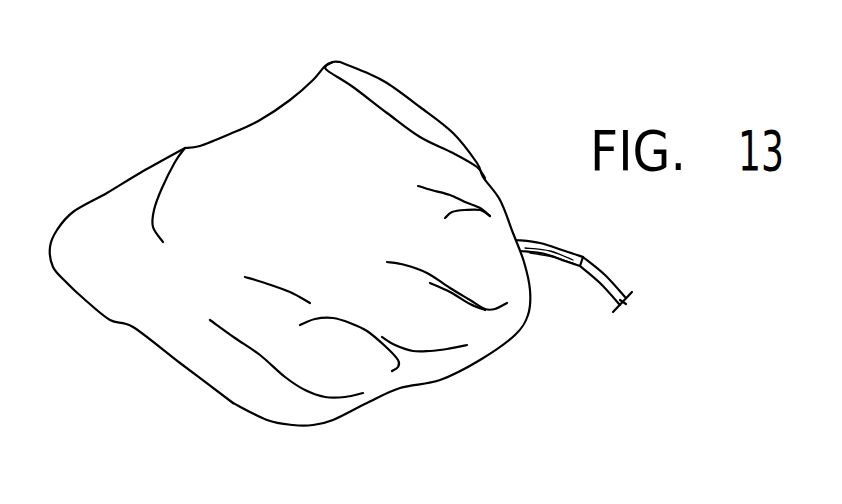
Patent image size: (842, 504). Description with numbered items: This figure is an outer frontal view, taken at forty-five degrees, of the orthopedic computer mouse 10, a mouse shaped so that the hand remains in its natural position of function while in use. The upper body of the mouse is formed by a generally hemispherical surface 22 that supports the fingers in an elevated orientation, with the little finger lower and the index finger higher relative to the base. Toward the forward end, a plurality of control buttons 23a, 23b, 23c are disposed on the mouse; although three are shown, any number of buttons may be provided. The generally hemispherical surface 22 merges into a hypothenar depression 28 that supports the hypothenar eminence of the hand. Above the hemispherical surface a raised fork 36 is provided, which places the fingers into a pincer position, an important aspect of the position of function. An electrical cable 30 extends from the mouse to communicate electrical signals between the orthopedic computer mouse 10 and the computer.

The orthopedic computer mouse 10 is at (267, 88).
The generally hemispherical surface 22 is at (200, 150).
The control button 23a is at (347, 376).
The control button 23b is at (457, 333).
The control button 23c is at (507, 287).
The hypothenar depression 28 is at (118, 290).
The electrical cable 30 is at (598, 280).
The raised fork 36 is at (397, 93).